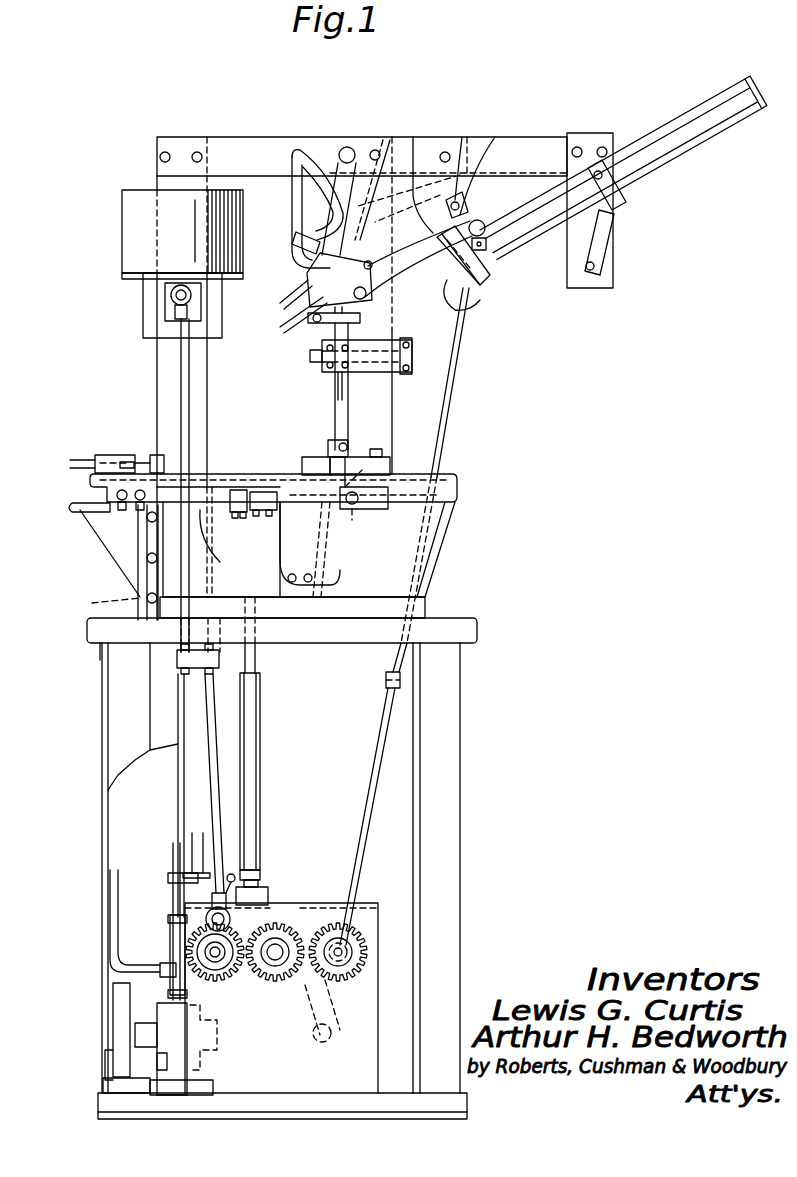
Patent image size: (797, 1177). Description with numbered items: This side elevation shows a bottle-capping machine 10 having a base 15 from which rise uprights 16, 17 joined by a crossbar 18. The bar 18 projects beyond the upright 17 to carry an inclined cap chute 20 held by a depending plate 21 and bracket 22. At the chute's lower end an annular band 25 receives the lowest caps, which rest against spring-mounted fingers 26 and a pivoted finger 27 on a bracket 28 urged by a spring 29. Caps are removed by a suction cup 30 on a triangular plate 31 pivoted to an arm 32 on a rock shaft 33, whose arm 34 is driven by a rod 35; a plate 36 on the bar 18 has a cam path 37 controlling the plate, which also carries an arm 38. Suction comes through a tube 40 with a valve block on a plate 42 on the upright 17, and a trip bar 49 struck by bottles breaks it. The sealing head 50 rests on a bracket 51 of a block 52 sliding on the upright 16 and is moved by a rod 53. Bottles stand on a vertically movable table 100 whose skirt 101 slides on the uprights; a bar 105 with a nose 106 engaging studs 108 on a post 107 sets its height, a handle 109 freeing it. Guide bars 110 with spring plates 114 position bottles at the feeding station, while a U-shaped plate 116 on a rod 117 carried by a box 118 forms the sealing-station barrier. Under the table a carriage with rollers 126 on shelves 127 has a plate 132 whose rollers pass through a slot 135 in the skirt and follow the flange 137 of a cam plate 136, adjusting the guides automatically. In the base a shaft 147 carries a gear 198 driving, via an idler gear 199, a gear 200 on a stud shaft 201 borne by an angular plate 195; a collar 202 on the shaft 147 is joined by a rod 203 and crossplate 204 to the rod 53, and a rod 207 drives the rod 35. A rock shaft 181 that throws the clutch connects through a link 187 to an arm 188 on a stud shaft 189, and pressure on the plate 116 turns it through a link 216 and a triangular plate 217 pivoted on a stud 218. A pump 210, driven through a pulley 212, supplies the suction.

The machine 10 is at (490, 621).
The base 15 is at (452, 800).
The upright 16 is at (157, 363).
The upright 17 is at (355, 388).
The crossbar 18 is at (362, 156).
The chute 20 is at (664, 165).
The depending plate 21 is at (605, 268).
The bracket 22 is at (605, 232).
The annular band 25 is at (468, 282).
The spring mounted fingers 26 is at (452, 300).
The pivotally mounted finger 27 is at (418, 130).
The bracket 28 is at (495, 137).
The spring 29 is at (462, 137).
The suction cup 30 is at (328, 304).
The triangular plate 31 is at (330, 318).
The arm 32 is at (316, 150).
The rock shaft 33 is at (349, 147).
The arm 34 is at (524, 204).
The rod 35 is at (453, 368).
The plate 36 is at (388, 137).
The cam path 37 is at (406, 190).
The arm 38 is at (290, 302).
The tube 40 is at (298, 220).
The plate 42 is at (372, 346).
The trip bar 49 is at (348, 326).
The head 50 is at (130, 233).
The bracket 51 is at (150, 286).
The block 52 is at (150, 302).
The rod 53 is at (178, 348).
The table 100 is at (250, 474).
The skirt 101 is at (440, 525).
The vertical bar 105 is at (140, 565).
The nose 106 is at (88, 605).
The post 107 is at (152, 540).
The studs 108 is at (92, 632).
The handle 109 is at (85, 513).
The bars 110 is at (355, 460).
The spring plates 114 is at (304, 460).
The U-shaped plate 116 is at (155, 455).
The rod 117 is at (90, 460).
The box 118 is at (105, 455).
The rollers 126 is at (356, 492).
The shelves 127 is at (106, 492).
The plate 132 is at (330, 545).
The slot 135 is at (350, 603).
The cam plate 136 is at (348, 462).
The flange 137 is at (332, 440).
The shaft 147 is at (203, 950).
The rock shaft 181 is at (257, 714).
The link 187 is at (264, 890).
The arm 188 is at (232, 876).
The stud shaft 189 is at (172, 848).
The right angular plate 195 is at (281, 998).
The gear 198 is at (222, 982).
The idler gear 199 is at (278, 978).
The gear 200 is at (355, 974).
The stud shaft 201 is at (358, 955).
The collar 202 is at (195, 960).
The rod 203 is at (205, 722).
The crossplate 204 is at (177, 660).
The rod 207 is at (382, 752).
The pump 210 is at (172, 1035).
The pulley 212 is at (113, 1005).
The link 216 is at (228, 543).
The triangular plate 217 is at (265, 510).
The stud 218 is at (238, 490).